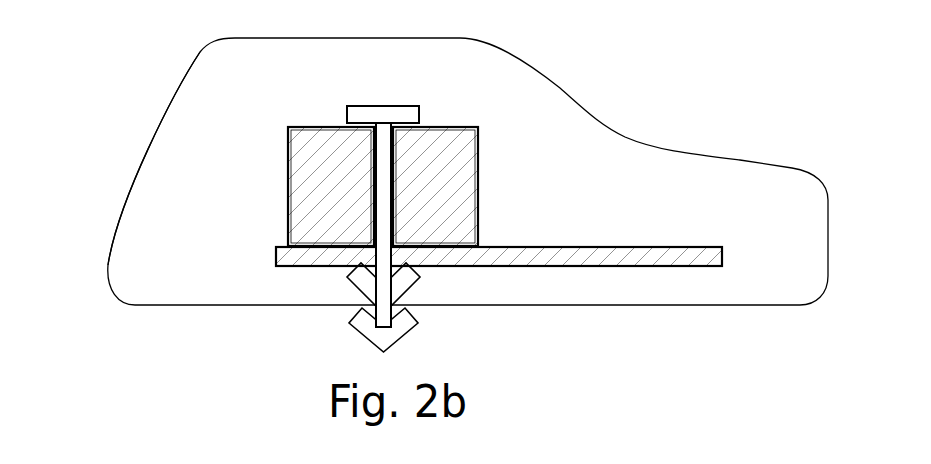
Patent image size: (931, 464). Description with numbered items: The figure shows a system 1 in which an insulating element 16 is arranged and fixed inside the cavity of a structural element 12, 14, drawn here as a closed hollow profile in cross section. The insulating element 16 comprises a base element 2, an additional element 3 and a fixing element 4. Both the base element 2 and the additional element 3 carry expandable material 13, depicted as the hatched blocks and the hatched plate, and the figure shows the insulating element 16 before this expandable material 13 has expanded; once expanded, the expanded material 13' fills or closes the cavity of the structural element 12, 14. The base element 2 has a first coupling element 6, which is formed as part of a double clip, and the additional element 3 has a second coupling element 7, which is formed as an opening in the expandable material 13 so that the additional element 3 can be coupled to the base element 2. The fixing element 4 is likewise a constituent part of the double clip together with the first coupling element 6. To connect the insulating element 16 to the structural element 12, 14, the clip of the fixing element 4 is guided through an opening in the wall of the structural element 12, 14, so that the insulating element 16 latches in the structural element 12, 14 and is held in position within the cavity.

The system 1 is at (688, 84).
The base element 2 is at (472, 155).
The additional element 3 is at (670, 248).
The fixing element 4 is at (408, 335).
The first coupling element 6 is at (400, 285).
The second coupling element 7 is at (362, 258).
The structural element 12 is at (127, 137).
The structural element 14 is at (173, 80).
The expandable material 13 is at (507, 155).
The expanded material 13' is at (520, 458).
The insulating element 16 is at (272, 126).